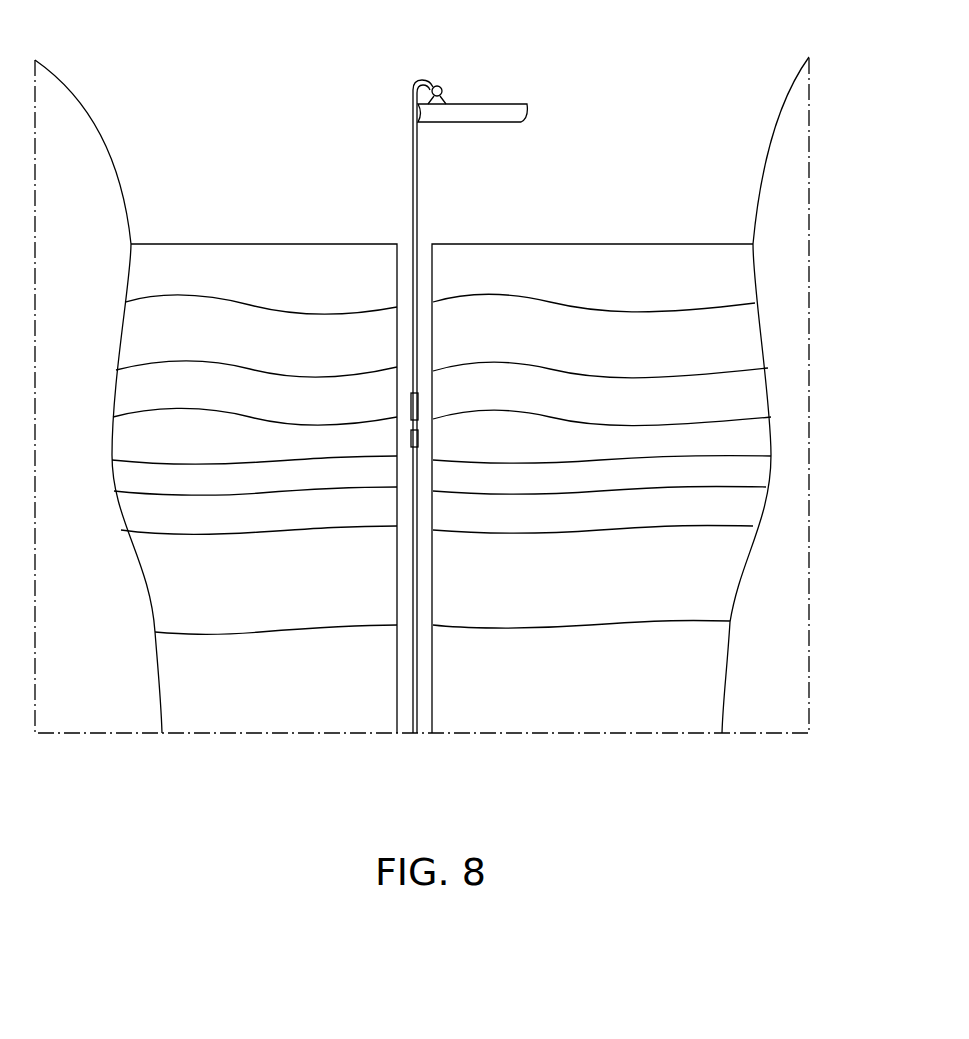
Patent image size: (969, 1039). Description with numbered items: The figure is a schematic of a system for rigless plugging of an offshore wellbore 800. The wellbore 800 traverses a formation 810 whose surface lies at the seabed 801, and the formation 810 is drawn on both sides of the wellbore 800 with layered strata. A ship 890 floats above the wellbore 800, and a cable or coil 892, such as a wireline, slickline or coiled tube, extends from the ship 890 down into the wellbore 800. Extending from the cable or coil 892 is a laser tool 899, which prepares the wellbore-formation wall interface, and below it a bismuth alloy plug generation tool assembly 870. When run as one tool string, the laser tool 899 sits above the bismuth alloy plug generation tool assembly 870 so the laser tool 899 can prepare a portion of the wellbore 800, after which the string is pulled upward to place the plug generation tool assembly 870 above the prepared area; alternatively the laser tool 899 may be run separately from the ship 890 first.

The wellbore 800 is at (418, 284).
The seabed 801 is at (562, 244).
The formation 810 is at (562, 337).
The bismuth alloy plug generation tool assembly 870 is at (418, 433).
The ship 890 is at (493, 104).
The cable or coil 892 is at (413, 192).
The laser tool 899 is at (418, 405).